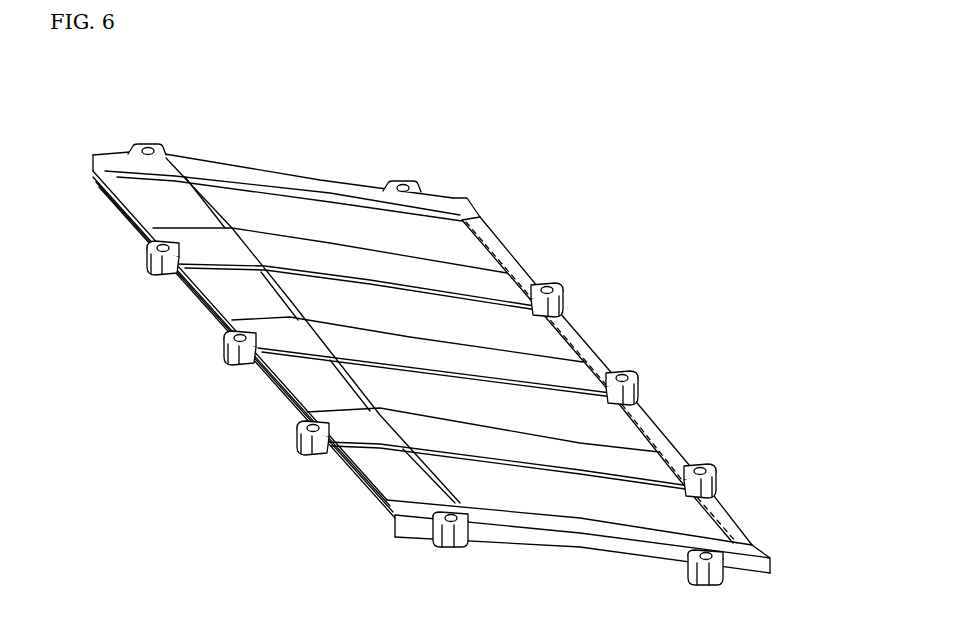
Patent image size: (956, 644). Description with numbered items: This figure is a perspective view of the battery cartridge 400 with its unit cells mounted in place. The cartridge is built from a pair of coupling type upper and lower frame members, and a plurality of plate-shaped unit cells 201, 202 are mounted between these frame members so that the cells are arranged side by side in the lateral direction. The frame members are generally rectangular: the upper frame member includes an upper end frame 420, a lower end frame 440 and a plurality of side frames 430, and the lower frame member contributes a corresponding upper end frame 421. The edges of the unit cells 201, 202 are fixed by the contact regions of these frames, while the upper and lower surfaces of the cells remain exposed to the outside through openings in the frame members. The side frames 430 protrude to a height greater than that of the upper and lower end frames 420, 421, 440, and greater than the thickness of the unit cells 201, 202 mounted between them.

The battery cartridge 400 is at (90, 100).
The unit cell 201 is at (373, 235).
The unit cell 202 is at (416, 327).
The upper end frame 420 is at (330, 458).
The upper end frame 421 is at (362, 503).
The side frame 430 is at (637, 467).
The lower end frame 440 is at (721, 517).